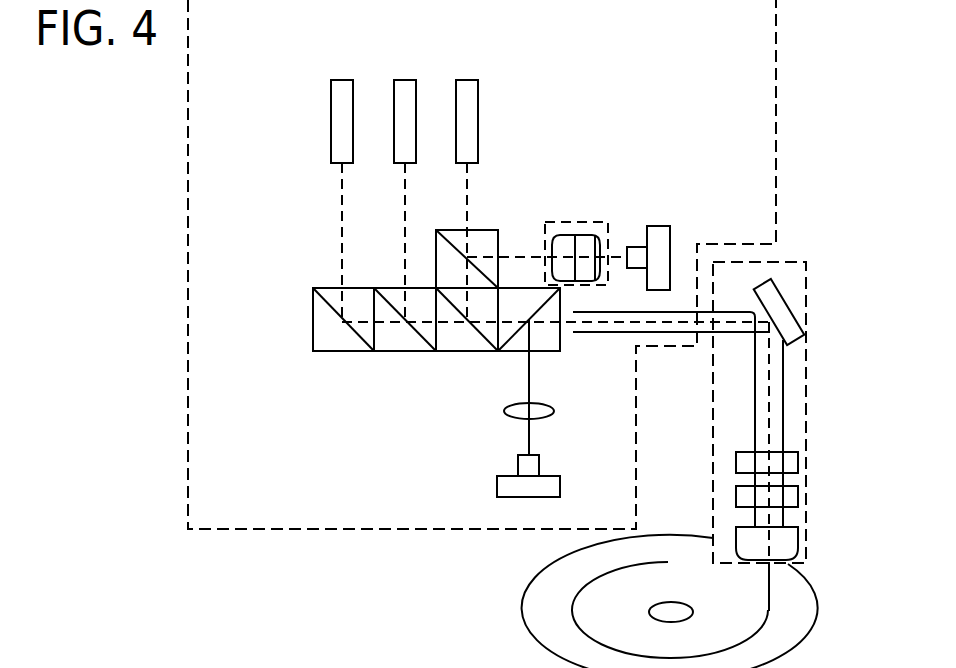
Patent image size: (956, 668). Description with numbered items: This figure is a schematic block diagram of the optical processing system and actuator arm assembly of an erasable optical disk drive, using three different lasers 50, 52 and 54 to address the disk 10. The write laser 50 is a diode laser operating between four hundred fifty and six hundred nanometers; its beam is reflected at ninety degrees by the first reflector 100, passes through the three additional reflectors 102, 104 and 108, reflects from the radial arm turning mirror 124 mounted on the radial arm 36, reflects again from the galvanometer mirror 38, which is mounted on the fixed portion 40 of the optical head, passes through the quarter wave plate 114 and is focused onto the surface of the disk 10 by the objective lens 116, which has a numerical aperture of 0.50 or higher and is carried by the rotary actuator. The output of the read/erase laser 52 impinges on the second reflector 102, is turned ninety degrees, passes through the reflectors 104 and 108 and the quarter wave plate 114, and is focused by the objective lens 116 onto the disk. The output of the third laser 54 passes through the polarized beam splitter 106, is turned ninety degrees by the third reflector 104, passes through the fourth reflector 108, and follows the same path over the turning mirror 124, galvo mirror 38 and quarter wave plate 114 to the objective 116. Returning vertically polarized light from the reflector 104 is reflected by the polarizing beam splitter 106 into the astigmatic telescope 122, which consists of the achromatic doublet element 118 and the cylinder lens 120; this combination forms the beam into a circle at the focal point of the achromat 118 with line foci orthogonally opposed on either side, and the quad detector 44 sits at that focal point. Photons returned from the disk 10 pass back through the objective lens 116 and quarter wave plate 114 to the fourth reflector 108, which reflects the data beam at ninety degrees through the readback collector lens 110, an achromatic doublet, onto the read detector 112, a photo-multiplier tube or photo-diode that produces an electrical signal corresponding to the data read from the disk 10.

The disk 10 is at (812, 585).
The radial arm 36 is at (806, 378).
The galvanometer mirror 38 is at (800, 452).
The fixed portion of the optical head 40 is at (778, 110).
The quad detector 44 is at (663, 226).
The write laser 50 is at (342, 80).
The read/erase laser 52 is at (405, 80).
The third laser 54 is at (467, 80).
The first reflector 100 is at (347, 351).
The second reflector 102 is at (417, 351).
The third reflector 104 is at (473, 351).
The polarized beam splitter 106 is at (457, 230).
The fourth reflector 108 is at (548, 352).
The readback collector lens 110 is at (553, 412).
The read detector 112 is at (500, 497).
The quarter wave plate 114 is at (798, 490).
The objective lens 116 is at (736, 530).
The achromatic doublet element 118 is at (547, 258).
The cylinder lens 120 is at (602, 258).
The astigmatic telescope 122 is at (558, 222).
The radial arm turning mirror 124 is at (788, 292).